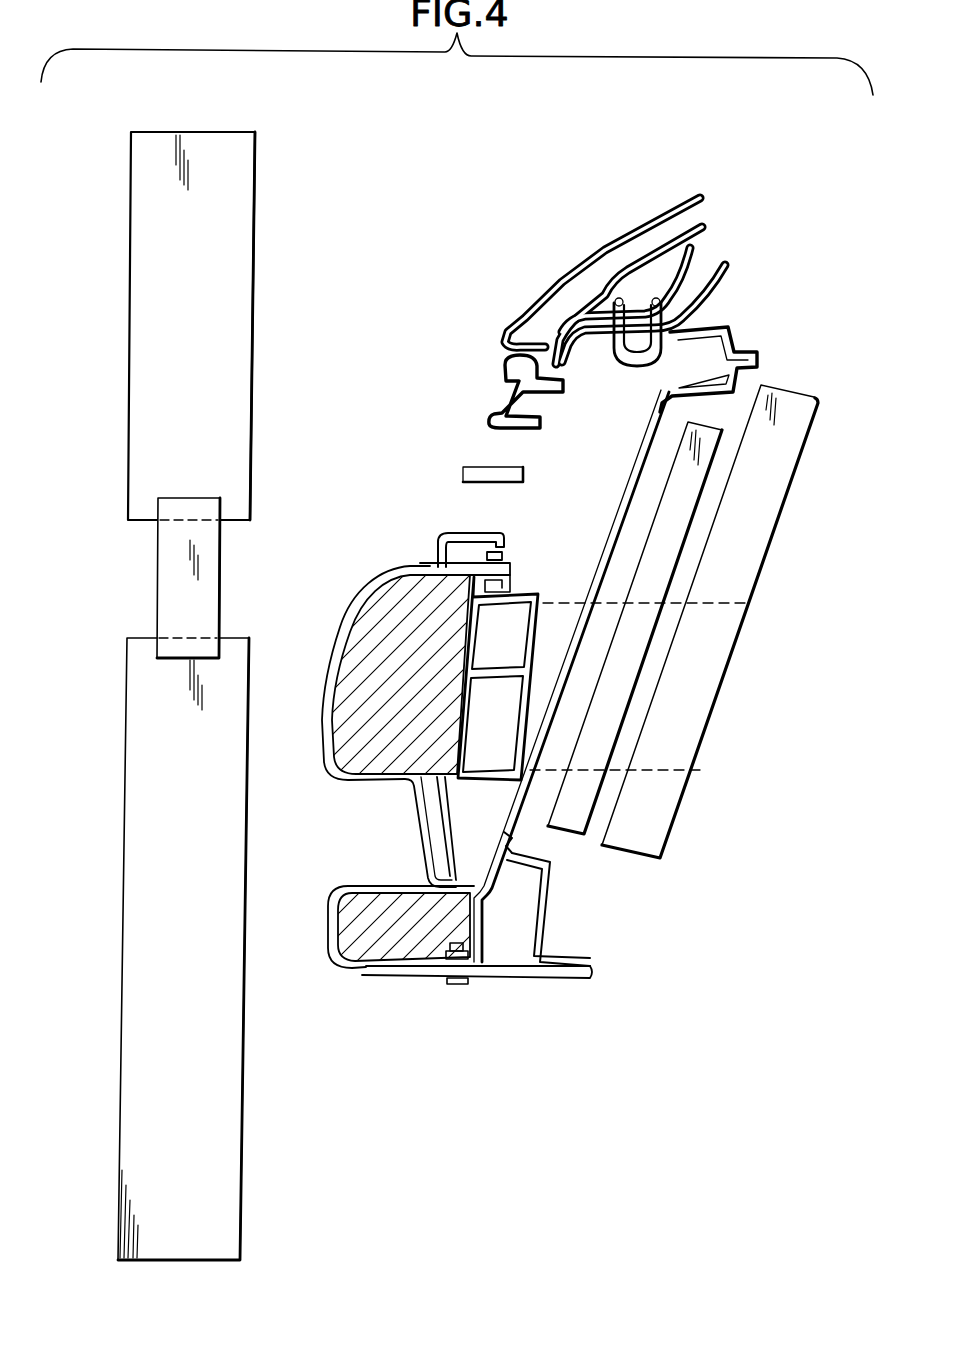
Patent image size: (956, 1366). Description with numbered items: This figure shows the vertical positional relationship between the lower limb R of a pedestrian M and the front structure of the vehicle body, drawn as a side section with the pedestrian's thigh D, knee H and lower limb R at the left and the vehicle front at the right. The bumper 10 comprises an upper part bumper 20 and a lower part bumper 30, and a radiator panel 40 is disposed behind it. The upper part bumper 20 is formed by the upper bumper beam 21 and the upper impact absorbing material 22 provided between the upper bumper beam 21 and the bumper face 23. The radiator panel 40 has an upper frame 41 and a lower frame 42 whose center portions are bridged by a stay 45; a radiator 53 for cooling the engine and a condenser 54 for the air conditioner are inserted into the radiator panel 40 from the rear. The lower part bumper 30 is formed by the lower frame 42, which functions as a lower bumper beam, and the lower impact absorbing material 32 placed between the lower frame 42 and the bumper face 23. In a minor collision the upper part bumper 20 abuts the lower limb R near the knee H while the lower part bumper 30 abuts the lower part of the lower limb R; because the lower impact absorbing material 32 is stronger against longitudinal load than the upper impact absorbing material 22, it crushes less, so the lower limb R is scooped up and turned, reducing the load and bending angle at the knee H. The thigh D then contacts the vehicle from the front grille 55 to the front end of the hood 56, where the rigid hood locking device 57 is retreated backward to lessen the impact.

The thigh D is at (121, 156).
The pedestrian M is at (115, 365).
The knee H is at (170, 591).
The lower limb R is at (116, 925).
The bumper 10 is at (391, 516).
The upper part bumper 20 is at (403, 683).
The upper bumper beam 21 is at (538, 598).
The upper impact absorbing material 22 is at (344, 708).
The bumper face 23 is at (330, 778).
The lower part bumper 30 is at (426, 975).
The lower impact absorbing material 32 is at (388, 944).
The radiator panel 40 is at (643, 610).
The upper frame 41 is at (742, 325).
The lower frame 42 is at (545, 947).
The stay 45 is at (621, 506).
The radiator 53 is at (778, 455).
The condenser 54 is at (688, 505).
The front grille 55 is at (492, 411).
The hood 56 is at (647, 224).
The hood locking device 57 is at (622, 374).